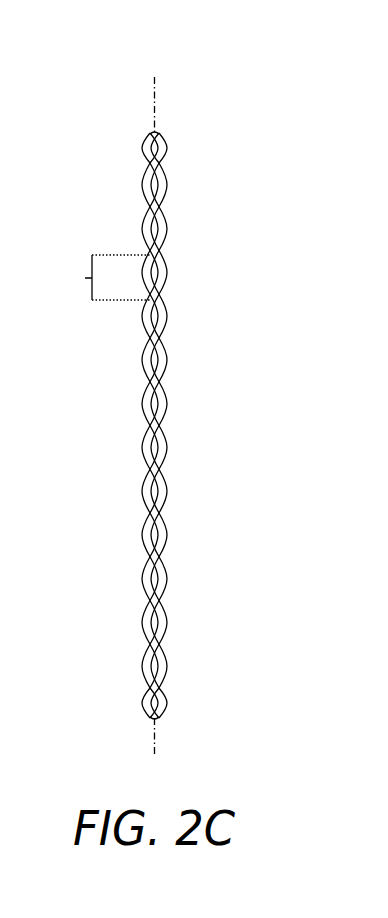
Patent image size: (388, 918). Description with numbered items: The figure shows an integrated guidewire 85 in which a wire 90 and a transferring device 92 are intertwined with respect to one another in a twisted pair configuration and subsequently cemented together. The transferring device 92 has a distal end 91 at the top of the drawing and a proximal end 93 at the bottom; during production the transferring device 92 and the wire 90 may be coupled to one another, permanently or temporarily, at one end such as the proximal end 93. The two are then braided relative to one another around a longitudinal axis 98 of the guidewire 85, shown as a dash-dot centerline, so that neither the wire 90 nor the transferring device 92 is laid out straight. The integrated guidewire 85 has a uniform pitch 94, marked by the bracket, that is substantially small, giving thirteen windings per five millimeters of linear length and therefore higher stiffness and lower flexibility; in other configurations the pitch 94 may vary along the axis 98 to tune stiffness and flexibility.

The integrated guidewire 85 is at (252, 428).
The wire 90 is at (165, 225).
The transferring device 92 is at (165, 275).
The distal end 91 is at (145, 137).
The proximal end 93 is at (138, 708).
The pitch 94 is at (104, 277).
The longitudinal axis 98 is at (154, 736).